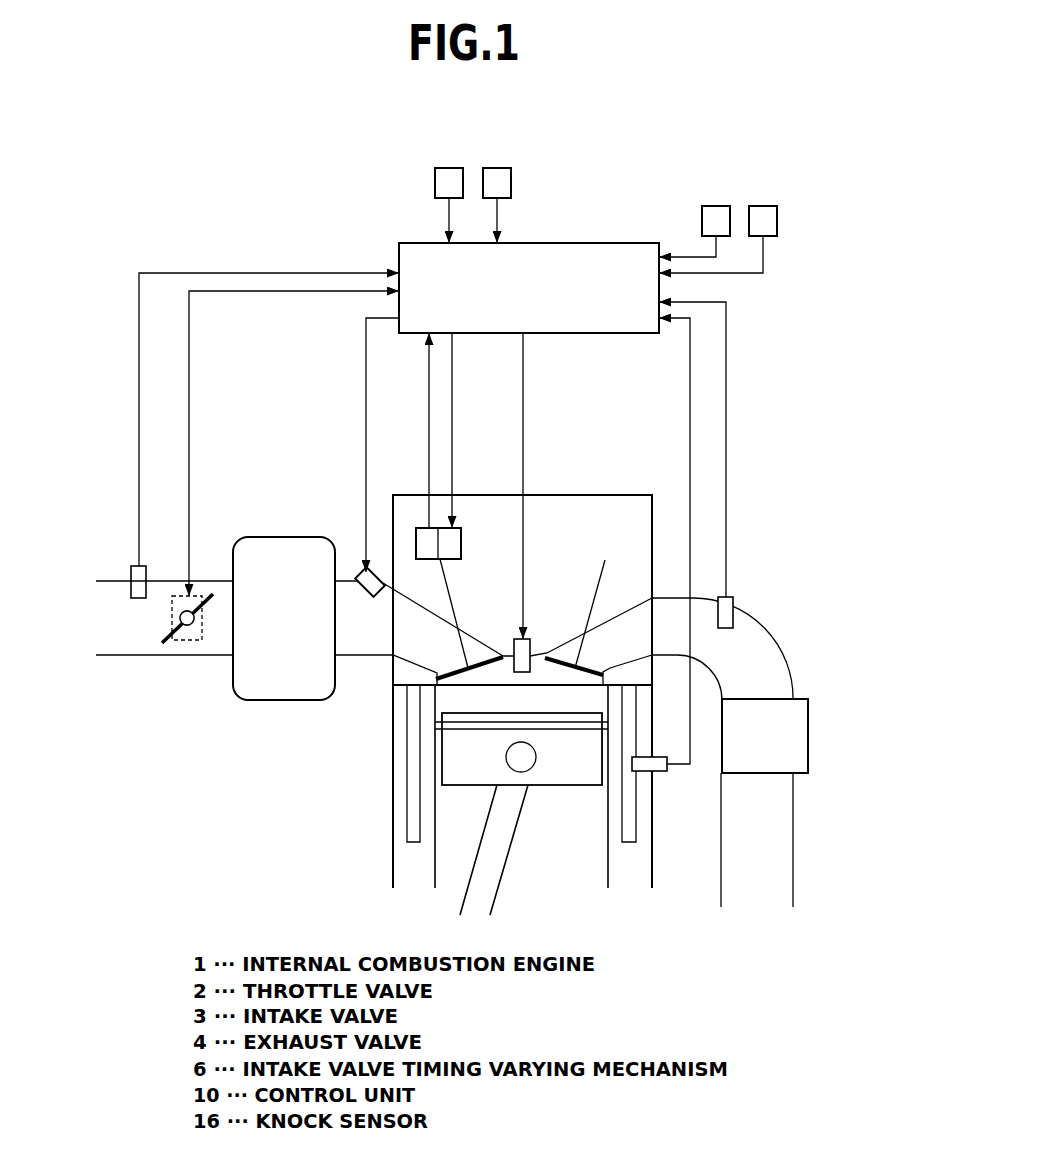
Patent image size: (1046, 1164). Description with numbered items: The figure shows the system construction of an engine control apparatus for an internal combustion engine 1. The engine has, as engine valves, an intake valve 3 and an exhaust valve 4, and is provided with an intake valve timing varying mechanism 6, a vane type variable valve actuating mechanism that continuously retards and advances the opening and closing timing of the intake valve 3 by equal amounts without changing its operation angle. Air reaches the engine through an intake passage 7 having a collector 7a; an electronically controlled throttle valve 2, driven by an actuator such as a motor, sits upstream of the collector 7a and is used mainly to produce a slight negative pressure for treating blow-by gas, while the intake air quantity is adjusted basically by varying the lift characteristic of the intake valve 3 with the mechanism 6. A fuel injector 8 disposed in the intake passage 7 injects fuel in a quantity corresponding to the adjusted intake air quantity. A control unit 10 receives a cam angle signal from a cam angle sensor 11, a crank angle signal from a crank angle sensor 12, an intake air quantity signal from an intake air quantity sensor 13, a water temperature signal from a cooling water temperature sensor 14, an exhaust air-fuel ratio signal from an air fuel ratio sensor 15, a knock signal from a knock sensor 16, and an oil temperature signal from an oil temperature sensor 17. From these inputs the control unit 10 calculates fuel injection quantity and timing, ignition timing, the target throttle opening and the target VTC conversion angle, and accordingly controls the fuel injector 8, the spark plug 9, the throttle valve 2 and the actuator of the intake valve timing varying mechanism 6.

The internal combustion engine 1 is at (390, 864).
The throttle valve 2 is at (169, 643).
The intake valve 3 is at (480, 655).
The exhaust valve 4 is at (562, 663).
The intake valve timing varying mechanism 6 is at (457, 542).
The intake passage 7 is at (370, 644).
The collector 7a is at (291, 690).
The fuel injector 8 is at (360, 572).
The spark plug 9 is at (530, 637).
The control unit 10 is at (582, 243).
The cam angle sensor 11 is at (716, 206).
The crank angle sensor 12 is at (763, 206).
The intake air quantity sensor 13 is at (139, 566).
The cooling water temperature sensor 14 is at (658, 775).
The air fuel ratio sensor 15 is at (735, 602).
The knock sensor 16 is at (449, 168).
The oil temperature sensor 17 is at (497, 168).